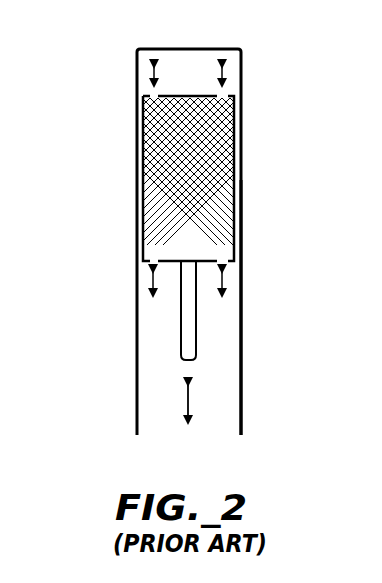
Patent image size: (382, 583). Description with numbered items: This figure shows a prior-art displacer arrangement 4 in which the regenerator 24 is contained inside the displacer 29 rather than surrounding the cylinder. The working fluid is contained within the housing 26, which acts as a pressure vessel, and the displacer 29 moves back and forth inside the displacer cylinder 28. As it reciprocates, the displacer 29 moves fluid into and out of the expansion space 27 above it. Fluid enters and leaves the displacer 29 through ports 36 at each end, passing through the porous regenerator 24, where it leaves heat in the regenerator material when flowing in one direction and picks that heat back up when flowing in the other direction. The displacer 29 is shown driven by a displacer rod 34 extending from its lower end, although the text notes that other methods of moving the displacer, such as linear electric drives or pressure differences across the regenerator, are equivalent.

The prior art device 4 is at (80, 173).
The regenerator 24 is at (146, 160).
The housing 26 is at (137, 60).
The expansion space 27 is at (194, 65).
The displacer cylinder 28 is at (241, 195).
The displacer 29 is at (237, 135).
The displacer rod 34 is at (197, 322).
The ports 36 is at (232, 88).